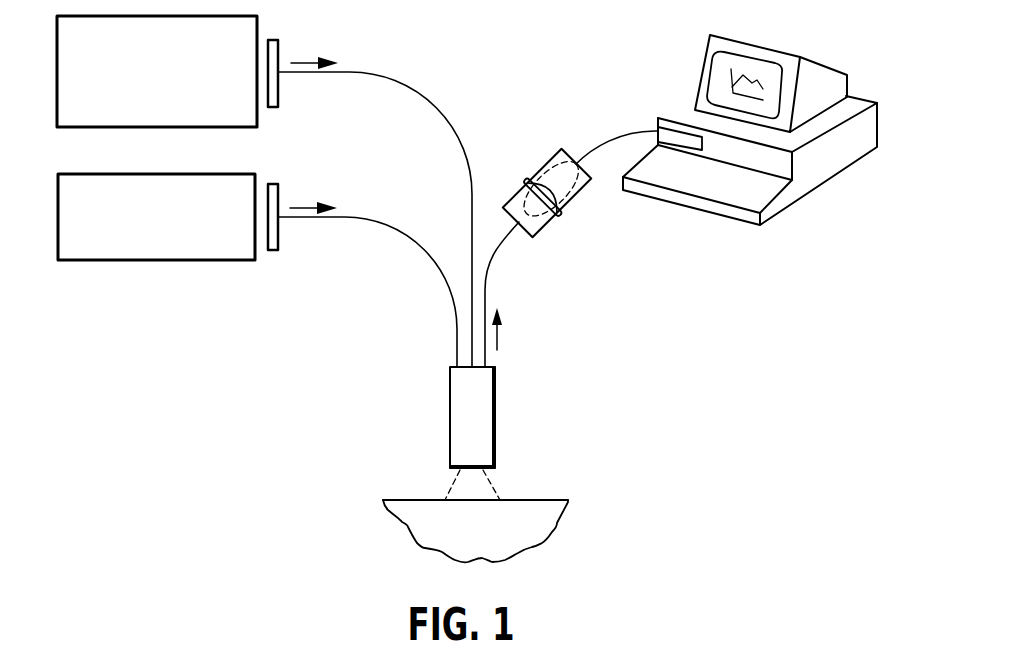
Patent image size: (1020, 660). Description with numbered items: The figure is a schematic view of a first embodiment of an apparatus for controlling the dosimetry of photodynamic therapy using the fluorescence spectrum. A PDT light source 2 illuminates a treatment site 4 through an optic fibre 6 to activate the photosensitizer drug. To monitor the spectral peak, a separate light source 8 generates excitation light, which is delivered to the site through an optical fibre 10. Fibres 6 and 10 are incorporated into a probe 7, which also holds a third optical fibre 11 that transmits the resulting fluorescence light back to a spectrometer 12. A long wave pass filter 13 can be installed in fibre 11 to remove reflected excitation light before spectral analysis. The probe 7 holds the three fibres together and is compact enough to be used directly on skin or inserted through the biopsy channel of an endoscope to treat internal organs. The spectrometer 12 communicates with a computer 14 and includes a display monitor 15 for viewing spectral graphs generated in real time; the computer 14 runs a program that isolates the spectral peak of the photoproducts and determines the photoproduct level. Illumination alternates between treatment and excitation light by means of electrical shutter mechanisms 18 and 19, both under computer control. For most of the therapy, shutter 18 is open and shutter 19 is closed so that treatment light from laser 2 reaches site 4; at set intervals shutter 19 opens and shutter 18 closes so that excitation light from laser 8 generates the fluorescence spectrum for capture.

The light source 2 is at (131, 261).
The treatment site 4 is at (538, 521).
The optic fibre 6 is at (408, 234).
The probe 7 is at (482, 422).
The light source 8 is at (131, 128).
The optical fibre 10 is at (441, 113).
The third optical fibre 11 is at (488, 279).
The spectrometer 12 is at (677, 137).
The long wave pass filter 13 is at (543, 225).
The computer 14 is at (735, 222).
The display monitor 15 is at (707, 57).
The electrical shutter mechanism 18 is at (278, 236).
The electrical shutter mechanism 19 is at (278, 92).